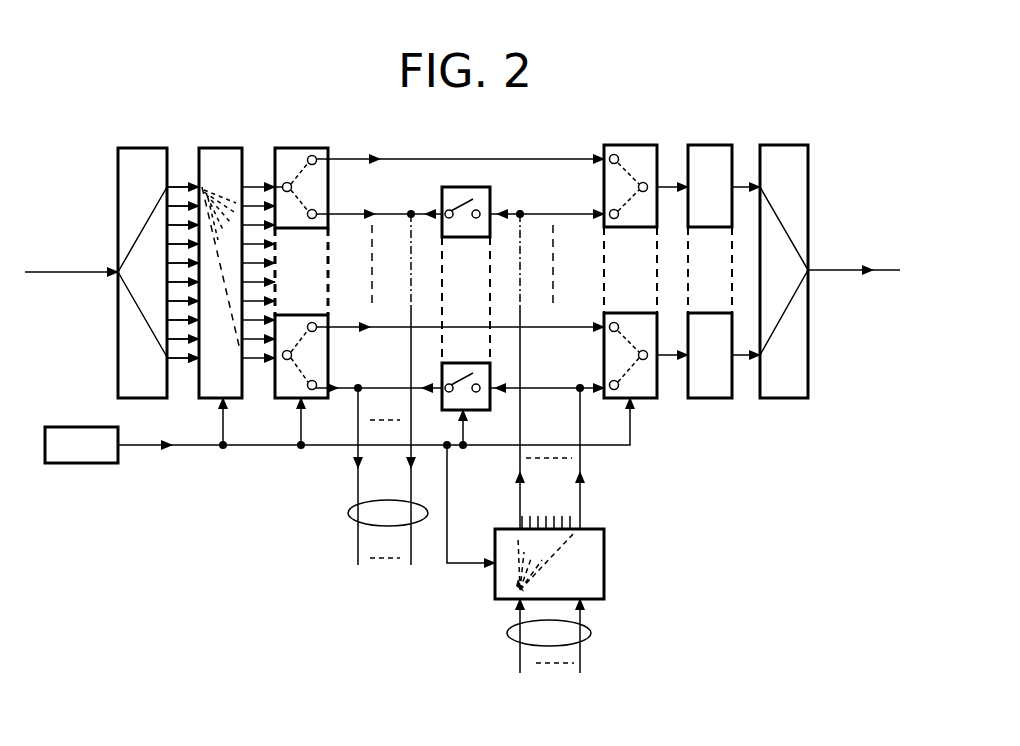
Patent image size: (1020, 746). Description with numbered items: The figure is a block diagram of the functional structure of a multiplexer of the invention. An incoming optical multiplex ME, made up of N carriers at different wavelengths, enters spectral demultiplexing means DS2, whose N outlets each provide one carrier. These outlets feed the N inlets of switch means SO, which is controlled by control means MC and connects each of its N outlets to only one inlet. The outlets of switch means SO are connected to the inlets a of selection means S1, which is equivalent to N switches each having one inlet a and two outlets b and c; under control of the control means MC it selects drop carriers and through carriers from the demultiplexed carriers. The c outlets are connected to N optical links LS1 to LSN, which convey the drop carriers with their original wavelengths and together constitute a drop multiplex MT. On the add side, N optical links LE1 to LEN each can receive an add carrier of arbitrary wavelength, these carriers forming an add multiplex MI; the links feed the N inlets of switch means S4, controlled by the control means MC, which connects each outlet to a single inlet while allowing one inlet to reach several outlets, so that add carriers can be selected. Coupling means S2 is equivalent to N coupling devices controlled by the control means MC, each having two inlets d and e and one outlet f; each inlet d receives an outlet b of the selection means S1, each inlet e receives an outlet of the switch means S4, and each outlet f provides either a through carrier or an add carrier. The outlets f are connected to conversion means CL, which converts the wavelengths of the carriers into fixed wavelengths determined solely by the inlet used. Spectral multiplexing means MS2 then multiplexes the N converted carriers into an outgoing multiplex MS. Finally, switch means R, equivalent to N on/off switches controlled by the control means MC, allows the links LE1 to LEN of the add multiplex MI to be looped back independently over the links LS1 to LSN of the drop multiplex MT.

The spectral demultiplexing means DS2 is at (137, 155).
The switch means SO is at (222, 155).
The selection means S1 is at (298, 155).
The coupling means S2 is at (631, 143).
The conversion means CL is at (710, 152).
The spectral multiplexing means MS2 is at (784, 152).
The switch means R is at (490, 201).
The control means MC is at (60, 465).
The switch means S4 is at (605, 563).
The incoming optical multiplex ME is at (45, 278).
The outgoing multiplex MS is at (845, 277).
The drop multiplex MT is at (350, 512).
The add multiplex MI is at (508, 641).
The optical link LS1 is at (358, 487).
The optical link LSN is at (413, 488).
The optical link LE1 is at (517, 621).
The optical link LEN is at (583, 622).
The inlet a is at (272, 175).
The outlet b is at (460, 146).
The outlet c is at (363, 227).
The inlet d is at (595, 144).
The inlet e is at (597, 228).
The outlet f is at (672, 174).